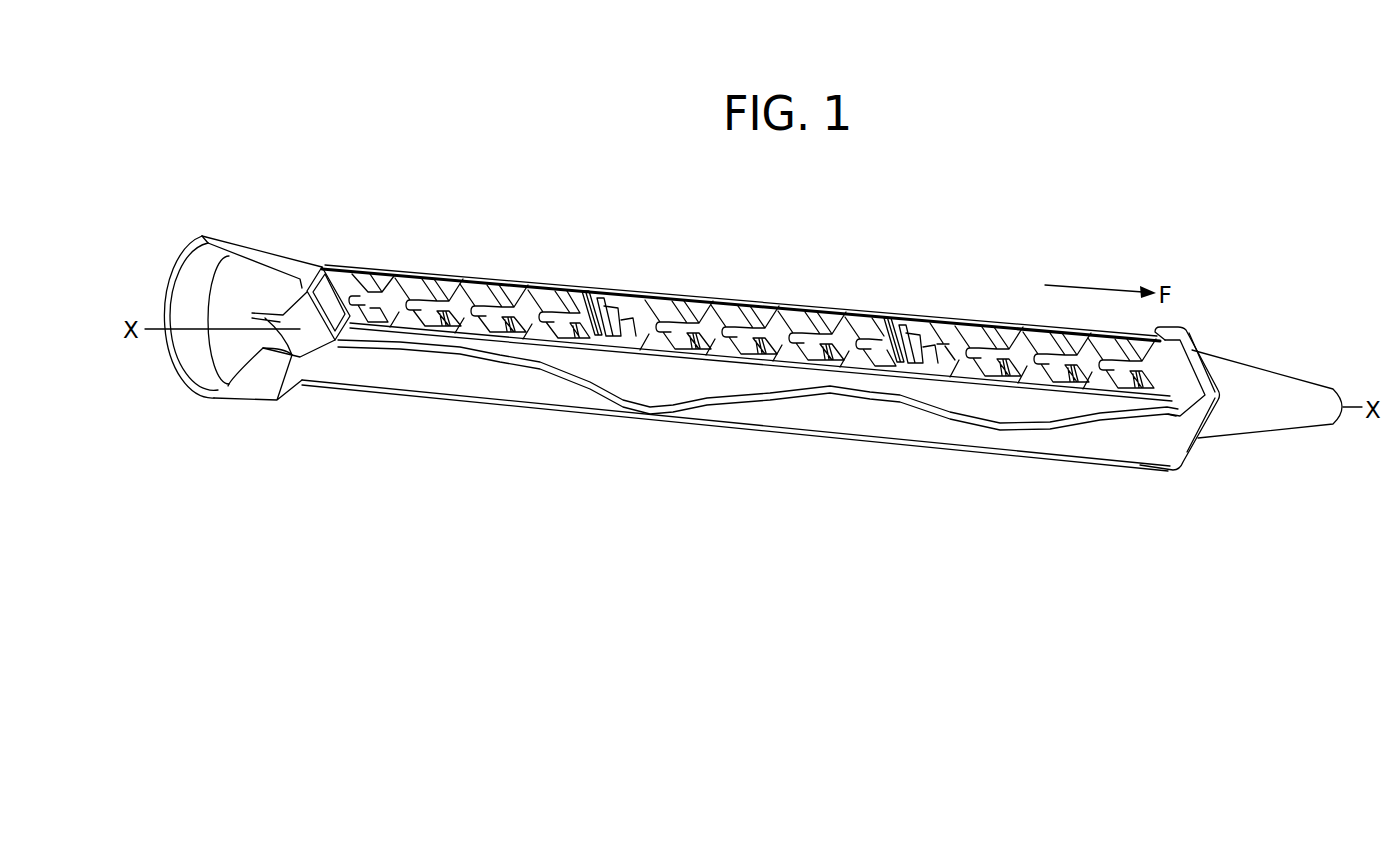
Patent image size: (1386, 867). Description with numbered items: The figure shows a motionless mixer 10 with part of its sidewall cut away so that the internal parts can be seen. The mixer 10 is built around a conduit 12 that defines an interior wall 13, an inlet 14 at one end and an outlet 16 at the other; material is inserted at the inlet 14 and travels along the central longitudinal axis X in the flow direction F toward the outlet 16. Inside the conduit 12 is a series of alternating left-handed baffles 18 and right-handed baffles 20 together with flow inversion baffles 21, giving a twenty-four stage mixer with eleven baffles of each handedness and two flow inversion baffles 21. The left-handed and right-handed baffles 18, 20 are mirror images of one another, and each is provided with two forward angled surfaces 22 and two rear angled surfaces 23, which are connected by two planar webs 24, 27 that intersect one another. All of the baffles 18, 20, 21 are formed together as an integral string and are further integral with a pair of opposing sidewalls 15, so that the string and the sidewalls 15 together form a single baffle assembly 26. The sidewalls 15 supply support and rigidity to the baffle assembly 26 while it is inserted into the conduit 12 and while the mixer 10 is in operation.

The mixer 10 is at (886, 233).
The conduit 12 is at (970, 430).
The interior wall 13 is at (548, 367).
The inlet 14 is at (157, 244).
The sidewalls 15 is at (693, 302).
The outlet 16 is at (1284, 355).
The left-handed baffles 18 is at (400, 328).
The right-handed baffles 20 is at (347, 270).
The flow inversion baffles 21 is at (598, 290).
The forward angled surfaces 22 is at (325, 267).
The rear angled surfaces 23 is at (500, 285).
The planar web 24 is at (350, 344).
The baffle assembly 26 is at (666, 378).
The planar web 27 is at (384, 272).